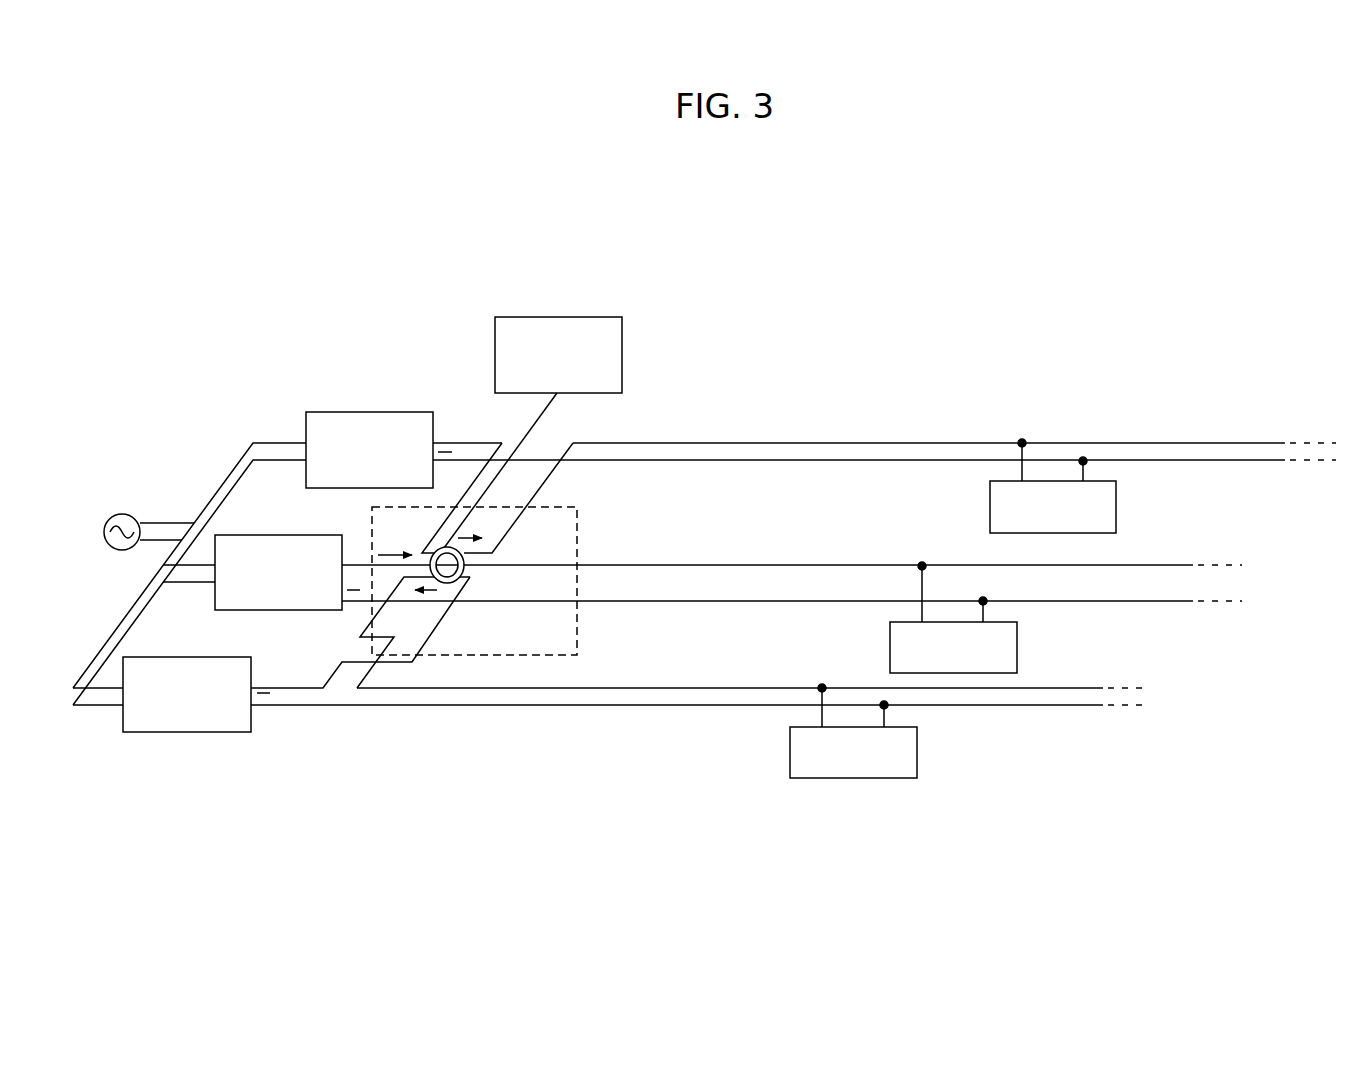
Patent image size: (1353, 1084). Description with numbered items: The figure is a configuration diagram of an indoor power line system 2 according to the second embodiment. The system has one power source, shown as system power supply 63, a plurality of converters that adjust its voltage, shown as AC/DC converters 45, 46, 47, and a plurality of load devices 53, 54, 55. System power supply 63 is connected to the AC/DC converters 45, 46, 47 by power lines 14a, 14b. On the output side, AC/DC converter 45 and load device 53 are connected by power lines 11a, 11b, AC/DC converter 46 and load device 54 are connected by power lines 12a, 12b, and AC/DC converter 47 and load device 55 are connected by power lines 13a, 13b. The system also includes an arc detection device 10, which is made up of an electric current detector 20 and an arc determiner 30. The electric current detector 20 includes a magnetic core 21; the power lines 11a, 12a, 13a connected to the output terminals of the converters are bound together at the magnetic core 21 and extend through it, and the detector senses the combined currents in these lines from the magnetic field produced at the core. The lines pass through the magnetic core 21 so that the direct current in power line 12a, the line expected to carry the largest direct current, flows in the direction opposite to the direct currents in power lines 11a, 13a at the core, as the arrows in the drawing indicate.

The indoor power line system 2 is at (1245, 300).
The arc detection device 10 is at (686, 308).
The electric current detector 20 is at (565, 507).
The magnetic core 21 is at (470, 553).
The arc determiner 30 is at (622, 340).
The AC/DC converter 45 is at (277, 535).
The AC/DC converter 46 is at (187, 657).
The AC/DC converter 47 is at (362, 412).
The load device 53 is at (1017, 647).
The load device 54 is at (917, 752).
The load device 55 is at (1116, 507).
The system power supply 63 is at (122, 513).
The power line 11a is at (673, 565).
The power line 11b is at (733, 602).
The power line 12a is at (623, 688).
The power line 12b is at (643, 706).
The power line 13a is at (723, 443).
The power line 13b is at (742, 462).
The power line 14a is at (190, 500).
The power line 14b is at (157, 548).